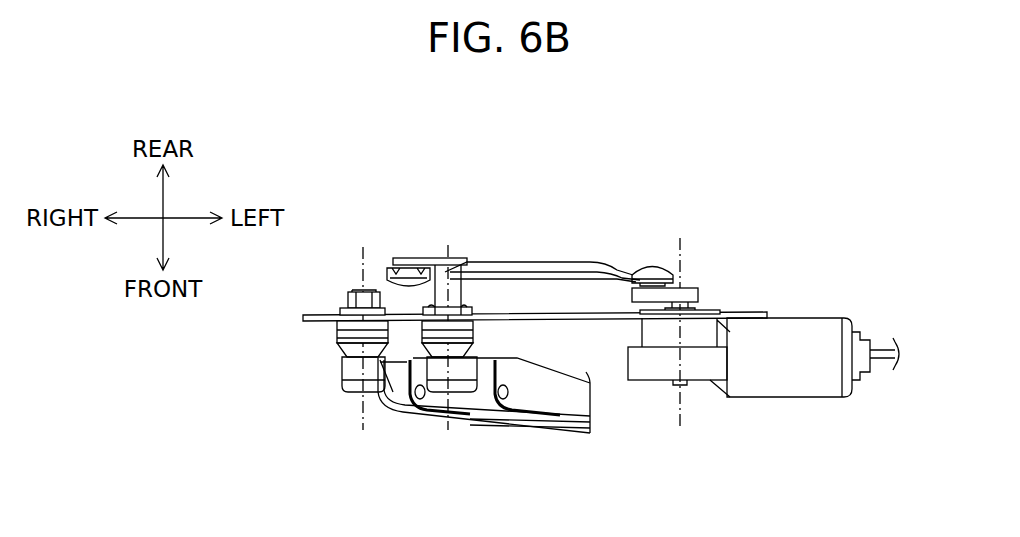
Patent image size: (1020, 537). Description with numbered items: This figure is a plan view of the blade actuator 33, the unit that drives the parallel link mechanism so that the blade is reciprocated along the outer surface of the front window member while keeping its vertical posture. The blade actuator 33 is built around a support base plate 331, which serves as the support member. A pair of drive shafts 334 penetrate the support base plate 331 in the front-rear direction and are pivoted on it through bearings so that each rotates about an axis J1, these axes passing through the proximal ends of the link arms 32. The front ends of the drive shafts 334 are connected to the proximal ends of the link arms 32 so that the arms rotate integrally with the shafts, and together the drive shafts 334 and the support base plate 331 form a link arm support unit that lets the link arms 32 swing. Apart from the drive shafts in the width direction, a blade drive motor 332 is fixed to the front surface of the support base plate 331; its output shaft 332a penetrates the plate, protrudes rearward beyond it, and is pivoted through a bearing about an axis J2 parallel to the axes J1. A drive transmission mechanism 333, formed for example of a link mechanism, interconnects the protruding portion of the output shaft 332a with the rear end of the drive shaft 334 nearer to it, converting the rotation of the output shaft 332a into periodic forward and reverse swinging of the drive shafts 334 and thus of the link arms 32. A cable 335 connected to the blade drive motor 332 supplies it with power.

The blade actuator 33 is at (632, 188).
The support base plate 331 is at (725, 312).
The blade drive motor 332 is at (792, 383).
The output shaft 332a is at (630, 316).
The drive transmission mechanism 333 is at (535, 252).
The drive shaft 334 is at (441, 306).
The cable 335 is at (888, 358).
The link arm 32 is at (470, 420).
The axis J1 is at (363, 430).
The axis J2 is at (680, 430).